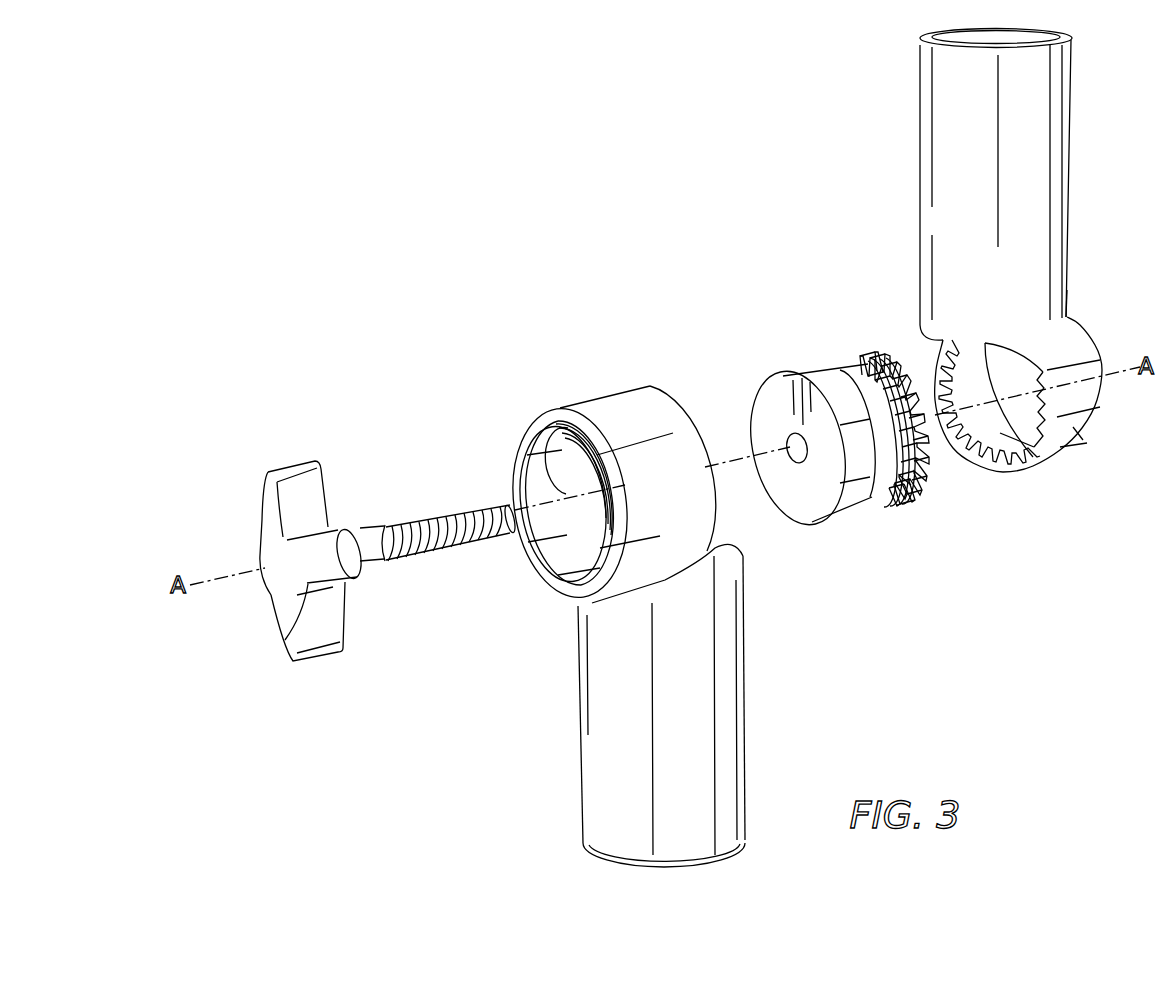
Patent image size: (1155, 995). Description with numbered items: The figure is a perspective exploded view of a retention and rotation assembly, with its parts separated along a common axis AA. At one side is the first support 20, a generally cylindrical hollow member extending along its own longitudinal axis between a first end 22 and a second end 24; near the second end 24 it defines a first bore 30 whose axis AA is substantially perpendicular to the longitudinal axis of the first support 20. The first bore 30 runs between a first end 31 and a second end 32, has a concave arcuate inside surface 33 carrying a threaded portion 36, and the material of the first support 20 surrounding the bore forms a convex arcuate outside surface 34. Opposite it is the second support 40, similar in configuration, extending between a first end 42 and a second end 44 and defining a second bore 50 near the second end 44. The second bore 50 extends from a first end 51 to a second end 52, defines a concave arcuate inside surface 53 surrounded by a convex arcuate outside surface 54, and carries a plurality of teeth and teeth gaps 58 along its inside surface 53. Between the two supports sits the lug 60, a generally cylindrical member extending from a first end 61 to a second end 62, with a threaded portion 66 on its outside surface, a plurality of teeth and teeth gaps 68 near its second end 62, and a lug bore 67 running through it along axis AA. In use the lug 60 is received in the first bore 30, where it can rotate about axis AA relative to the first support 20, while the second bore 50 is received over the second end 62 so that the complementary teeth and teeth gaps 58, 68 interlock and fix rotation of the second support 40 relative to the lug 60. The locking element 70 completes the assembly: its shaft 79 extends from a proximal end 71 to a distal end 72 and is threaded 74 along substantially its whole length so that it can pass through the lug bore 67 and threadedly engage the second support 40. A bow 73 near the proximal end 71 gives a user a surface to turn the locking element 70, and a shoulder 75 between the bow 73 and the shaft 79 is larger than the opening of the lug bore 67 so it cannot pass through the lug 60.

The first support 20 is at (595, 757).
The first end 22 is at (628, 866).
The second end 24 is at (622, 388).
The first bore 30 is at (528, 430).
The first end 31 is at (505, 450).
The second end 32 is at (685, 418).
The concave arcuate inside surface 33 is at (522, 440).
The convex arcuate outside surface 34 is at (603, 420).
The threaded portion 36 is at (575, 430).
The second support 40 is at (1043, 220).
The first end 42 is at (933, 27).
The second end 44 is at (1065, 462).
The second bore 50 is at (938, 378).
The first end 51 is at (923, 332).
The second end 52 is at (1088, 330).
The concave arcuate inside surface 53 is at (978, 345).
The convex arcuate outside surface 54 is at (1077, 430).
The teeth and teeth gaps 58 is at (972, 468).
The lug 60 is at (822, 368).
The first end 61 is at (778, 391).
The second end 62 is at (880, 358).
The threaded portion 66 is at (855, 362).
The lug bore 67 is at (790, 460).
The teeth and teeth gaps 68 is at (908, 494).
The locking element 70 is at (412, 548).
The proximal end 71 is at (368, 560).
The distal end 72 is at (530, 545).
The bow 73 is at (290, 630).
The threaded portion 74 is at (497, 508).
The shoulder 75 is at (348, 535).
The shaft 79 is at (424, 520).